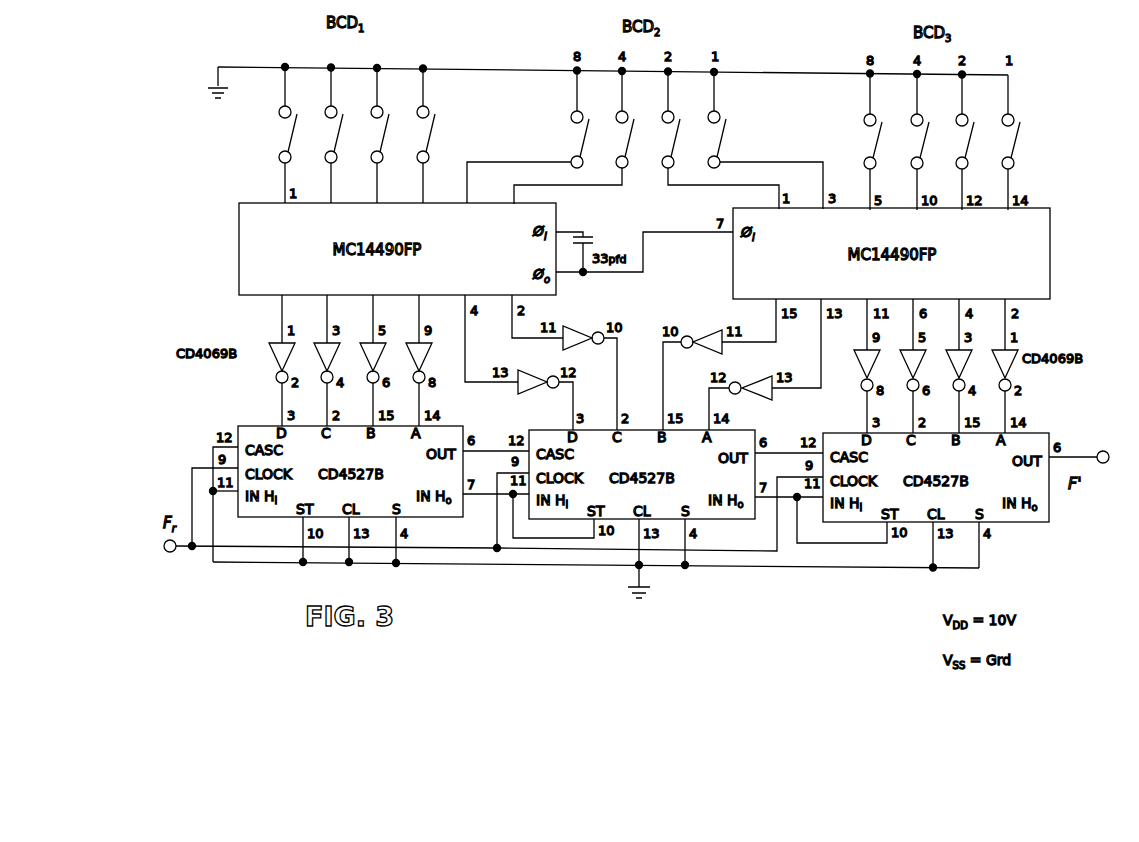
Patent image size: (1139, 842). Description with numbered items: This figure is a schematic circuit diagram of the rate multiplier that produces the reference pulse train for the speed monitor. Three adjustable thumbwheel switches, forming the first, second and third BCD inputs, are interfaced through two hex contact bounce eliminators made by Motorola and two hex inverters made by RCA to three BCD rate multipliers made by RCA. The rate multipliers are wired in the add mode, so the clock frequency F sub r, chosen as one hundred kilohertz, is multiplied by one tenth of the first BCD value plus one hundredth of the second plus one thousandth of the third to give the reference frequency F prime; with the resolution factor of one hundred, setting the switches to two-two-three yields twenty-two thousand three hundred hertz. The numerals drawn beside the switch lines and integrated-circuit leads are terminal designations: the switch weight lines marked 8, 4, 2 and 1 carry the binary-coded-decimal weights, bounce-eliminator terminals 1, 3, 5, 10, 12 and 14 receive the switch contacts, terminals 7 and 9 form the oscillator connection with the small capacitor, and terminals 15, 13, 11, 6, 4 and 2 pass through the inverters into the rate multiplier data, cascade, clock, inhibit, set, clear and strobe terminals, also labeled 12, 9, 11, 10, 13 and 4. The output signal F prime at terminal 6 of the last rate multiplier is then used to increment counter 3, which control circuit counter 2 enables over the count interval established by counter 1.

The counter 1 is at (426, 104).
The control circuit counter 2 is at (380, 104).
The counter 3 is at (337, 183).
The BCD weight 4 input switch 4 is at (334, 104).
The MC14490FP input pin 5 is at (383, 183).
The MC14490FP output pin 6 is at (426, 319).
The MC14490FP oscillator input pin 7 is at (569, 226).
The BCD weight 8 input switch 8 is at (288, 104).
The MC14490FP oscillator output pin 9 is at (644, 252).
The MC14490FP input pin 10 is at (433, 183).
The MC14490FP output pin 11 is at (384, 319).
The MC14490FP input pin 12 is at (519, 182).
The MC14490FP output pin 13 is at (338, 319).
The MC14490FP input pin 14 is at (568, 186).
The MC14490FP output pin 15 is at (293, 319).